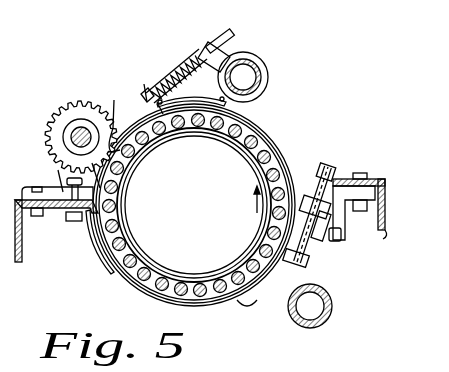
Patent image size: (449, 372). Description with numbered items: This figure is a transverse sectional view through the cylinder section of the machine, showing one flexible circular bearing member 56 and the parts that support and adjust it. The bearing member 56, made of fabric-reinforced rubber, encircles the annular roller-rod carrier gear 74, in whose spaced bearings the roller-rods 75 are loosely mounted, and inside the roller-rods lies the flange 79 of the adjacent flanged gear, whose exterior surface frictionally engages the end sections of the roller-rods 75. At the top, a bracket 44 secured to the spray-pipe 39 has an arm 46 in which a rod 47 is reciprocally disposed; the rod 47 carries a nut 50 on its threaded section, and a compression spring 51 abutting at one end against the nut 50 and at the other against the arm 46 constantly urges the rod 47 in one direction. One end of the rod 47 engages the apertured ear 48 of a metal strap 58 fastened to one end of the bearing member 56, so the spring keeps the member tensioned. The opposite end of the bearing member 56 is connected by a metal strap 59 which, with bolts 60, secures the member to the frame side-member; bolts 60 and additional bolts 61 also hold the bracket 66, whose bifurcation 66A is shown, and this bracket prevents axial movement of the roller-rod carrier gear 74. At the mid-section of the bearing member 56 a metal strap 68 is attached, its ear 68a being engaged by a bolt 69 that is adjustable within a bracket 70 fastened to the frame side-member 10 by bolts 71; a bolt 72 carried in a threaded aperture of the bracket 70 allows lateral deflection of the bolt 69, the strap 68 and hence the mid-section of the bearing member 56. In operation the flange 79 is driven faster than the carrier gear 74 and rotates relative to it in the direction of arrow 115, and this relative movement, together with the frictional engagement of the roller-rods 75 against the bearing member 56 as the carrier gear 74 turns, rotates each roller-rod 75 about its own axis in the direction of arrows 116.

The frame side-member 10 is at (384, 233).
The spray-pipe 39 is at (255, 88).
The bracket 44 is at (268, 73).
The arm 46 is at (204, 47).
The rod 47 is at (238, 37).
The apertured ear 48 is at (150, 94).
The nut 50 is at (160, 76).
The compression spring 51 is at (183, 70).
The flexible circular bearing member 56 is at (277, 147).
The metal strap 58 is at (190, 102).
The metal strap 59 is at (96, 232).
The bolt 60 is at (70, 213).
The bolt 61 is at (36, 187).
The bracket 66 is at (60, 186).
The bifurcation 66A is at (116, 128).
The metal strap 68 is at (243, 297).
The ear 68a is at (302, 266).
The bolt 69 is at (308, 249).
The bracket 70 is at (338, 186).
The bolt 71 is at (360, 174).
The bolt 72 is at (338, 239).
The roller-rod carrier gear 74 is at (140, 134).
The roller-rod 75 is at (125, 263).
The flange 79 is at (237, 143).
The arrow 115 is at (256, 204).
The arrows 116 is at (241, 268).